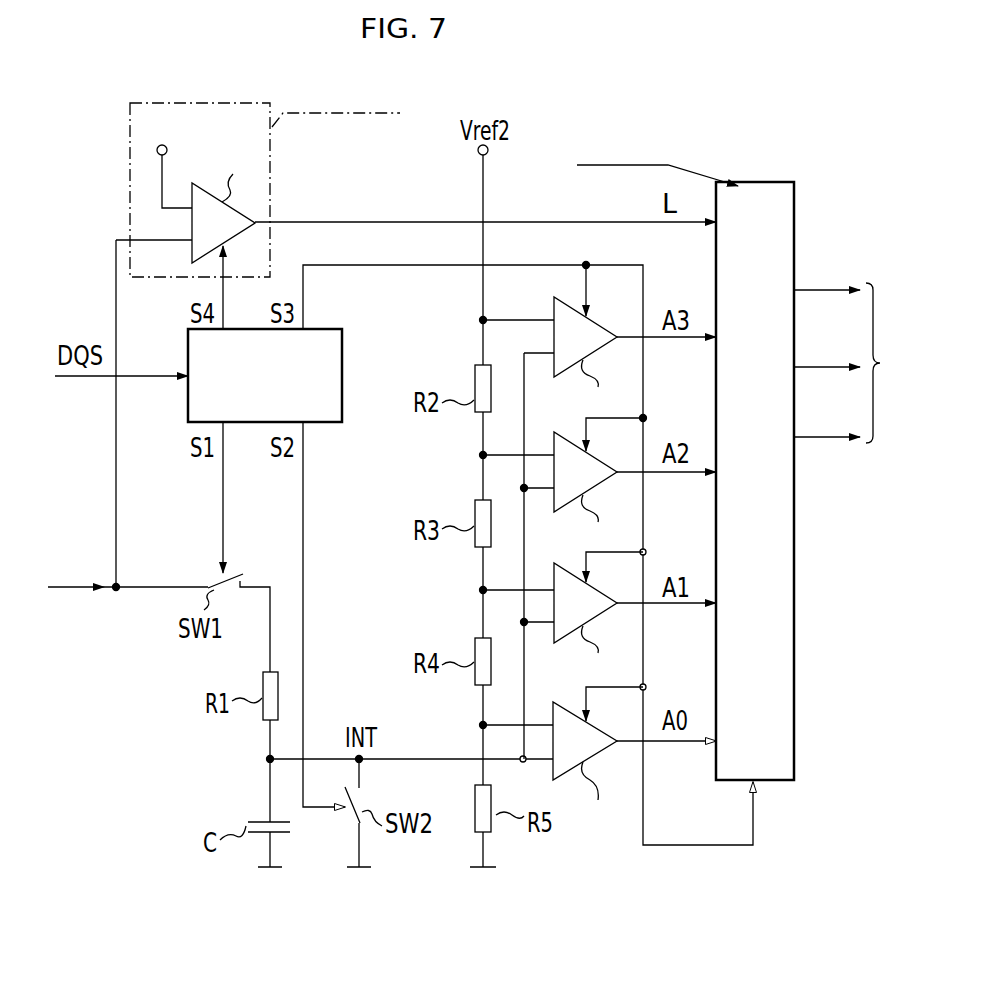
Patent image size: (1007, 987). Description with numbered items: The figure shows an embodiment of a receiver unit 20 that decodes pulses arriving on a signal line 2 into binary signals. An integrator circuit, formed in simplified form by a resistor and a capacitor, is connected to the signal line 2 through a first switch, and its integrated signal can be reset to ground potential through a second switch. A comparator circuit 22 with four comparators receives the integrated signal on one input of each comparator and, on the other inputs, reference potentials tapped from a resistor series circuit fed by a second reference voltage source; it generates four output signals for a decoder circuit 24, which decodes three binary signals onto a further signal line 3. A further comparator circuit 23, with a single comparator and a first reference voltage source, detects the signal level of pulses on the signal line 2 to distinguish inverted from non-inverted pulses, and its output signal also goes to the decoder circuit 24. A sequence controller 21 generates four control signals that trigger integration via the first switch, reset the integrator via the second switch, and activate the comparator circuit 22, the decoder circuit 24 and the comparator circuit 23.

The signal line 2 is at (76, 591).
The signal line 3 is at (845, 353).
The receiver unit 20 is at (685, 425).
The sequence controller 21 is at (342, 378).
The comparator circuit 22 is at (587, 840).
The comparator circuit 23 is at (207, 103).
The decoder circuit 24 is at (755, 182).